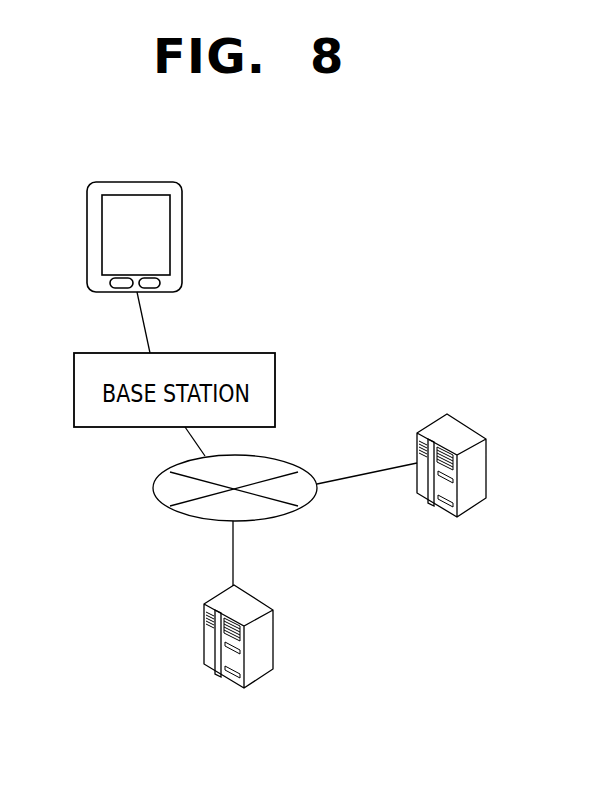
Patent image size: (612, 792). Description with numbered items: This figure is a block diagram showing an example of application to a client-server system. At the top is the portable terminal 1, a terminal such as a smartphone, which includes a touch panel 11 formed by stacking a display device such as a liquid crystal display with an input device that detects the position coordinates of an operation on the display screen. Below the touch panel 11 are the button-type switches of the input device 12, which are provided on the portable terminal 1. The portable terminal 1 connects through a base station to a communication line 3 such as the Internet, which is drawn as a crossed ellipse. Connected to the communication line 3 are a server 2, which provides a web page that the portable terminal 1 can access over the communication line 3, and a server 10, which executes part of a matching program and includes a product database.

The portable terminal 1 is at (182, 225).
The touch panel 11 is at (102, 231).
The input device 12 is at (118, 291).
The communication line 3 is at (160, 504).
The server 10 is at (478, 476).
The server 2 is at (263, 650).